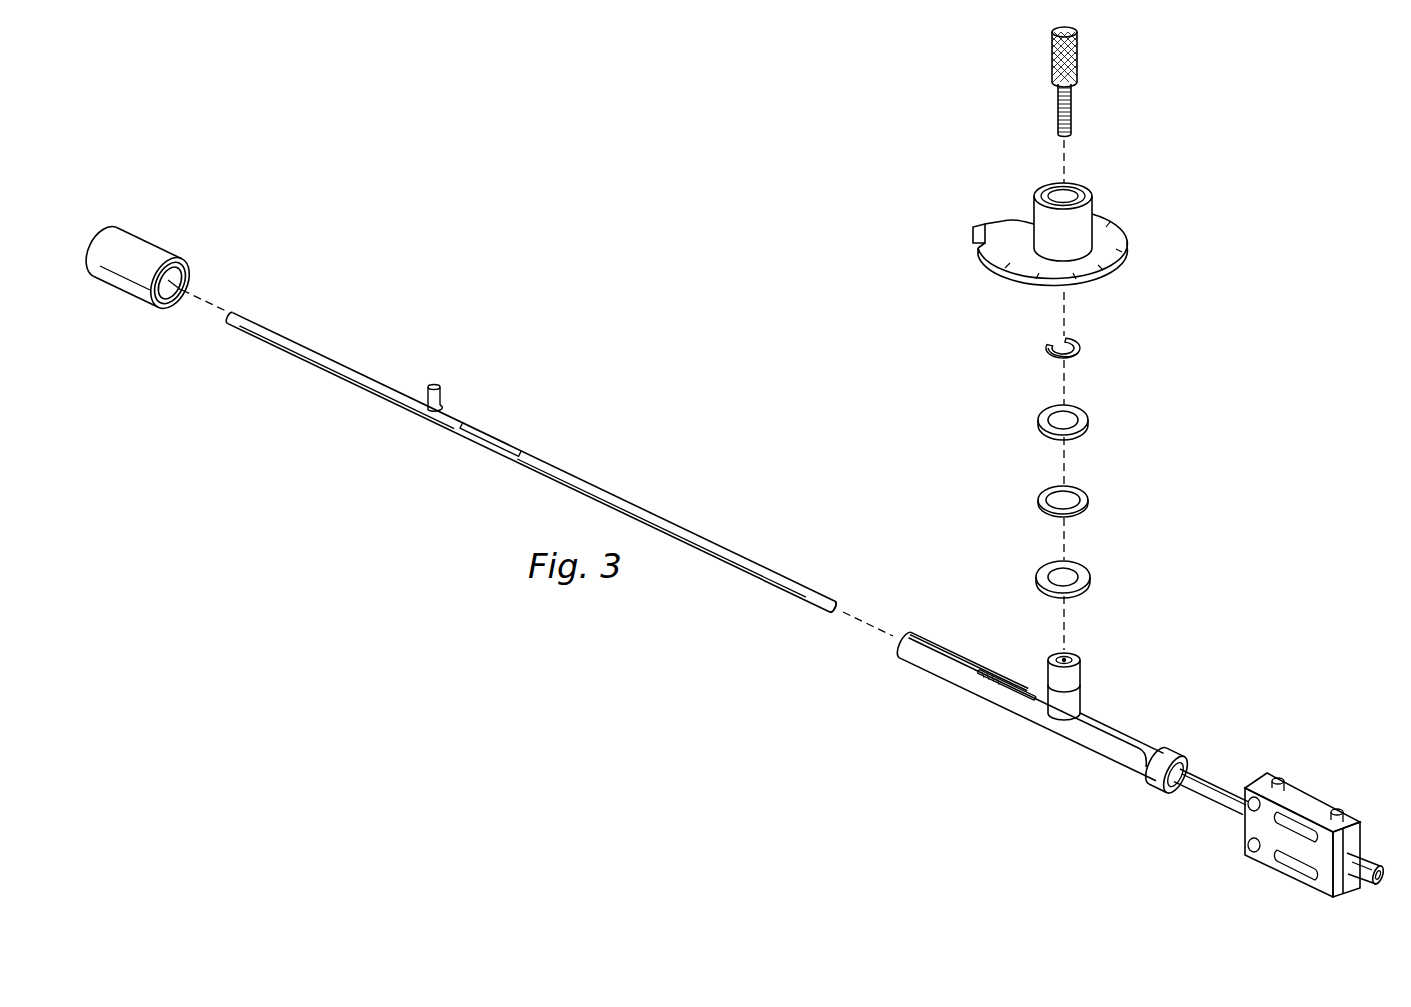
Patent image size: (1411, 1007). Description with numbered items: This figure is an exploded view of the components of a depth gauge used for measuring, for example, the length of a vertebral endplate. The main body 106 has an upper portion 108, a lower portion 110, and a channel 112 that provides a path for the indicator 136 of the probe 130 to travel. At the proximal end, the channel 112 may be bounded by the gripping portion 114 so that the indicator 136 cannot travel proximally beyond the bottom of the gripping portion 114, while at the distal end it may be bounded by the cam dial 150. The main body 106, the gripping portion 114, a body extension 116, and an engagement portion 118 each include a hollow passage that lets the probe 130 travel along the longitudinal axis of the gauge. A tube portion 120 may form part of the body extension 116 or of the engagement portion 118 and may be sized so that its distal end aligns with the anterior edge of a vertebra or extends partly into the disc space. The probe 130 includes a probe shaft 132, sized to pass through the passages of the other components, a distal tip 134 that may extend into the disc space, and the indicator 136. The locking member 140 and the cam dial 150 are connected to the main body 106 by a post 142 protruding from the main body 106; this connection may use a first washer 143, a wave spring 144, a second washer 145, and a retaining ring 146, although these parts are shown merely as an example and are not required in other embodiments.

The main body 106 is at (1080, 753).
The upper portion 108 is at (915, 670).
The lower portion 110 is at (1187, 758).
The channel 112 is at (943, 645).
The gripping portion 114 is at (153, 244).
The body extension 116 is at (1213, 806).
The engagement portion 118 is at (1312, 790).
The tube portion 120 is at (1378, 855).
The probe 130 is at (344, 380).
The probe shaft 132 is at (638, 506).
The distal tip 134 is at (838, 600).
The indicator 136 is at (437, 383).
The locking member 140 is at (1050, 50).
The post 142 is at (1082, 670).
The first washer 143 is at (1090, 580).
The wave spring 144 is at (1088, 500).
The second washer 145 is at (1088, 420).
The retaining ring 146 is at (1083, 345).
The cam dial 150 is at (1003, 220).